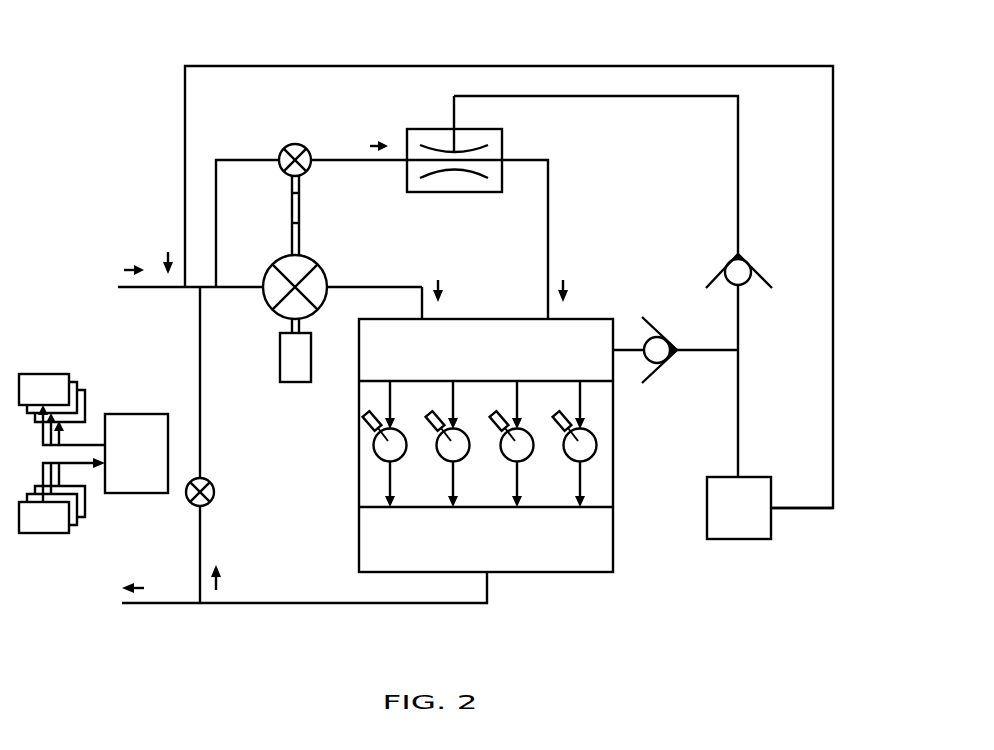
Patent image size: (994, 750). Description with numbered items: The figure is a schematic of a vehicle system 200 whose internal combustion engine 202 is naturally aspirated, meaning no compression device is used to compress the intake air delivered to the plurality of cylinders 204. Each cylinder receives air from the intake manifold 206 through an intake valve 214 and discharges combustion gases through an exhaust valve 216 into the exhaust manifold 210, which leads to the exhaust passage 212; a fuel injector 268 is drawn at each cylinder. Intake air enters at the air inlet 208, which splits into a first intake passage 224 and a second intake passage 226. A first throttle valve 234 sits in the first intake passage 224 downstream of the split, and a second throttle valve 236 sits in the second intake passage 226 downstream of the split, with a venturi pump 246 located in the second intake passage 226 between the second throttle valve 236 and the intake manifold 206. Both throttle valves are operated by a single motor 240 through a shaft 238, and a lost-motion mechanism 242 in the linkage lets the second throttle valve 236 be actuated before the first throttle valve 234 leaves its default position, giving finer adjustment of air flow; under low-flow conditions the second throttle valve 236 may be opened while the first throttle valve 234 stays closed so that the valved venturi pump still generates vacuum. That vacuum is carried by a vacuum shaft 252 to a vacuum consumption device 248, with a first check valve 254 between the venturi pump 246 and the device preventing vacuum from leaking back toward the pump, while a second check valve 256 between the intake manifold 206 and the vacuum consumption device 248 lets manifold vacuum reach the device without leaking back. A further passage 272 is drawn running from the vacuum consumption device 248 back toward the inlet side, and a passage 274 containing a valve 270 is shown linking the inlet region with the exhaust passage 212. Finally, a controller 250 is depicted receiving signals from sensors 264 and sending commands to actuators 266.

The vehicle system 200 is at (117, 23).
The internal combustion engine 202 is at (613, 476).
The plurality of cylinders 204 is at (630, 439).
The intake manifold 206 is at (470, 361).
The air inlet 208 is at (166, 292).
The exhaust manifold 210 is at (470, 549).
The exhaust passage 212 is at (297, 605).
The intake valve 214 is at (392, 398).
The exhaust valve 216 is at (392, 478).
The first intake passage 224 is at (409, 284).
The second intake passage 226 is at (249, 158).
The first throttle valve 234 is at (309, 258).
The second throttle valve 236 is at (293, 146).
The shaft 238 is at (289, 237).
The motor 240 is at (311, 362).
The lost-motion mechanism 242 is at (301, 206).
The venturi pump 246 is at (455, 193).
The vacuum consumption device 248 is at (738, 539).
The controller 250 is at (121, 466).
The vacuum shaft 252 is at (738, 160).
The first check valve 254 is at (752, 268).
The second check valve 256 is at (665, 330).
The sensors 264 is at (29, 528).
The actuators 266 is at (29, 401).
The fuel injector 268 is at (366, 415).
The EGR valve 270 is at (214, 492).
The vacuum passage 272 is at (833, 378).
The EGR passage 274 is at (200, 444).